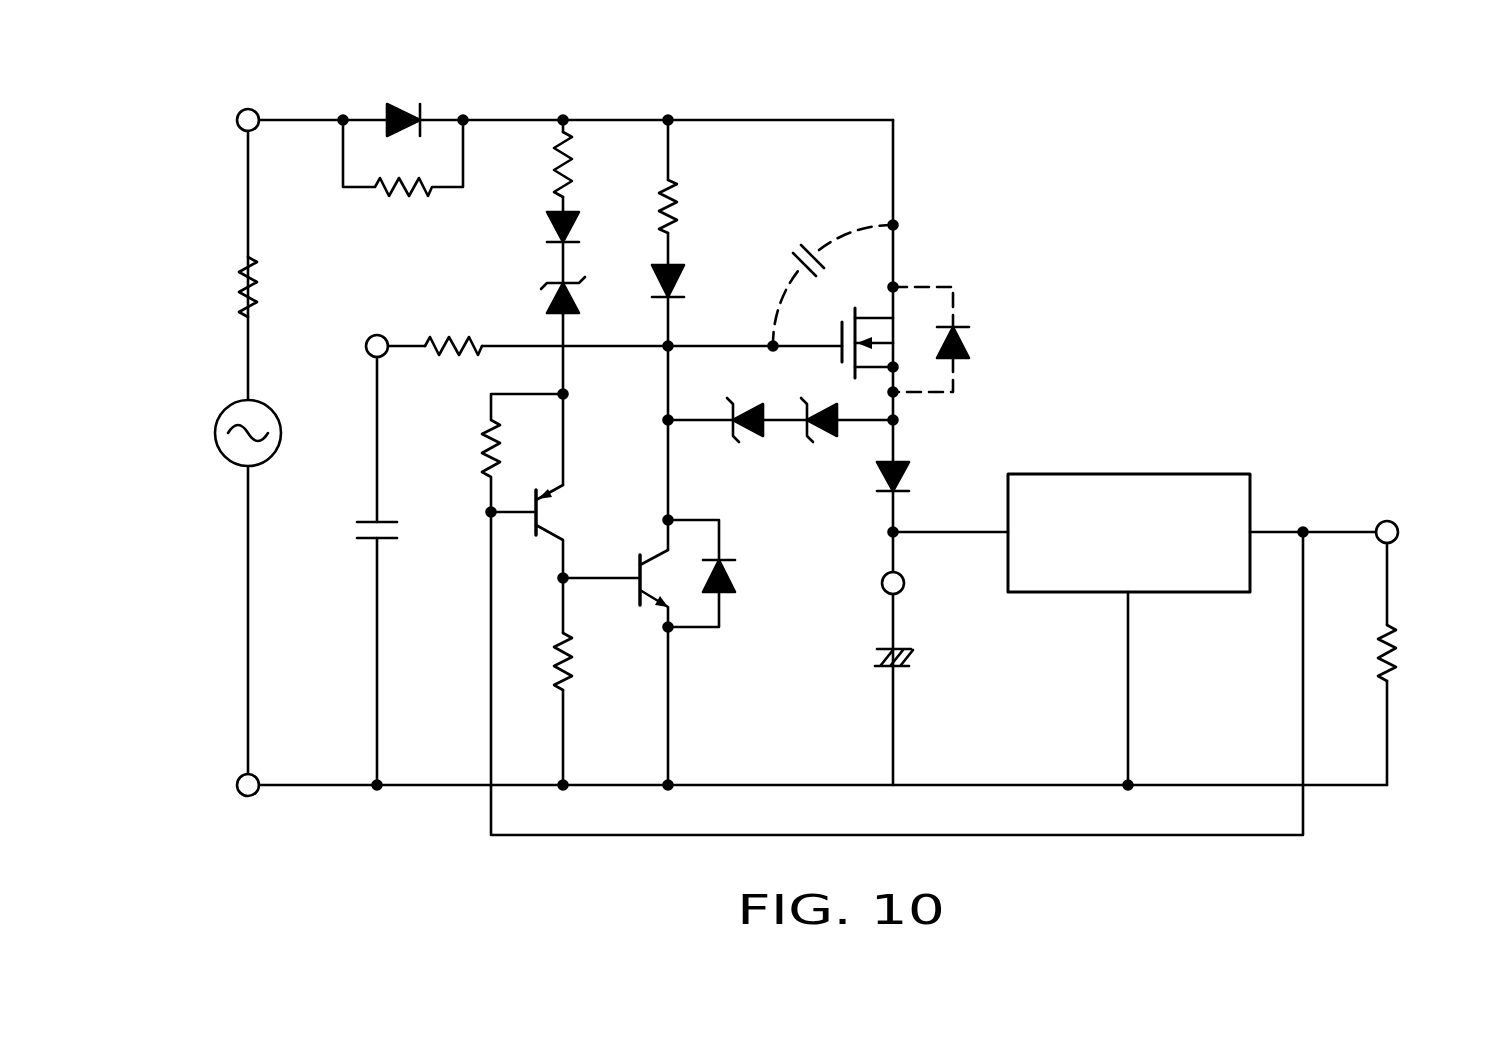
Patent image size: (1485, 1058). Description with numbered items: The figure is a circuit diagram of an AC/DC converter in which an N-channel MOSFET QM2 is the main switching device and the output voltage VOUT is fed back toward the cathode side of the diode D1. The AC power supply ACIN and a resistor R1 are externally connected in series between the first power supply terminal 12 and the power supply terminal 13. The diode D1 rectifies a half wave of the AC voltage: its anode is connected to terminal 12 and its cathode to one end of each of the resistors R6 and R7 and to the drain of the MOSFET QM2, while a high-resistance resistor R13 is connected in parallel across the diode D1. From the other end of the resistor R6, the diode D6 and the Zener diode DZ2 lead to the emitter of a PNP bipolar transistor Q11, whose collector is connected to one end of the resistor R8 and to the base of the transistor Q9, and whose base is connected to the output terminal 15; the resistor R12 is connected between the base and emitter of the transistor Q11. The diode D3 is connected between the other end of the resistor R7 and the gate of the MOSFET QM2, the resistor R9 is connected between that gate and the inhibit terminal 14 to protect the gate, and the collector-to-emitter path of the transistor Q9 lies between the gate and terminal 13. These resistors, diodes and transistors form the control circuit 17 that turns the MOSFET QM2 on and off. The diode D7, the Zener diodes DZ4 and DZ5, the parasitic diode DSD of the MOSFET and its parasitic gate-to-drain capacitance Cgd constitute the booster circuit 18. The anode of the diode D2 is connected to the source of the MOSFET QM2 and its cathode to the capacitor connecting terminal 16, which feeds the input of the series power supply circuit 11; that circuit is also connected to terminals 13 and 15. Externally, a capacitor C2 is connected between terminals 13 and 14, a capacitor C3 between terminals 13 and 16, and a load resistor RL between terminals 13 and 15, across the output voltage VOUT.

The series power supply circuit 11 is at (1198, 473).
The first power supply terminal 12 is at (247, 109).
The power supply terminal 13 is at (250, 797).
The inhibit terminal 14 is at (375, 335).
The output terminal 15 is at (1384, 521).
The capacitor connecting terminal 16 is at (881, 585).
The control circuit 17 is at (616, 102).
The booster circuit 18 is at (747, 293).
The resistor R1 is at (240, 290).
The resistor R6 is at (574, 165).
The resistor R7 is at (657, 204).
The resistor R8 is at (578, 670).
The resistor R9 is at (452, 336).
The resistor R12 is at (484, 450).
The resistor R13 is at (404, 196).
The load resistor RL is at (1404, 656).
The capacitor C2 is at (352, 532).
The capacitor C3 is at (914, 658).
The parasitic capacitance Cgd is at (792, 258).
The diode D1 is at (405, 106).
The diode D2 is at (910, 468).
The diode D3 is at (658, 286).
The diode D6 is at (572, 230).
The diode D7 is at (738, 580).
The Zener diode DZ2 is at (545, 282).
The Zener diode DZ4 is at (746, 440).
The Zener diode DZ5 is at (822, 441).
The parasitic diode DSD is at (962, 346).
The transistor Q9 is at (640, 610).
The PNP bipolar transistor Q11 is at (556, 518).
The N-channel MOSFET QM2 is at (930, 378).
The AC power supply ACIN is at (219, 433).
The output voltage VOUT is at (1436, 531).